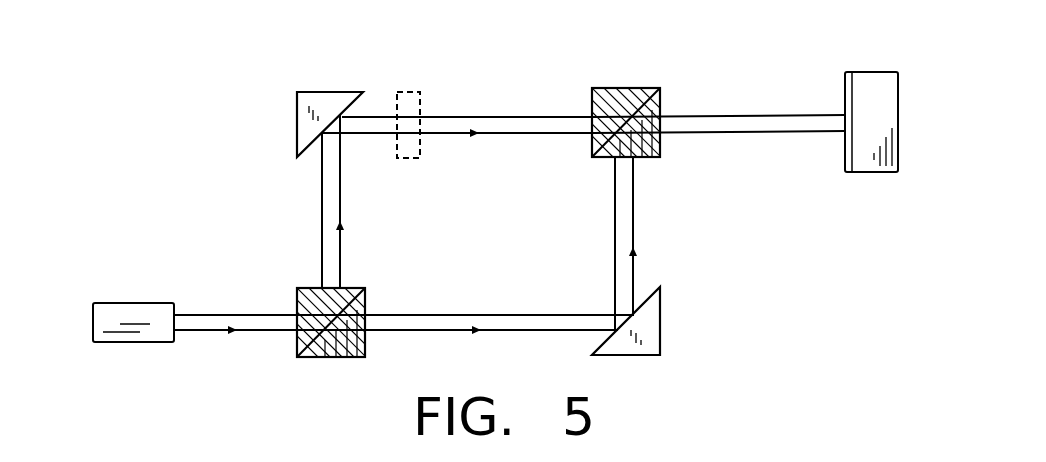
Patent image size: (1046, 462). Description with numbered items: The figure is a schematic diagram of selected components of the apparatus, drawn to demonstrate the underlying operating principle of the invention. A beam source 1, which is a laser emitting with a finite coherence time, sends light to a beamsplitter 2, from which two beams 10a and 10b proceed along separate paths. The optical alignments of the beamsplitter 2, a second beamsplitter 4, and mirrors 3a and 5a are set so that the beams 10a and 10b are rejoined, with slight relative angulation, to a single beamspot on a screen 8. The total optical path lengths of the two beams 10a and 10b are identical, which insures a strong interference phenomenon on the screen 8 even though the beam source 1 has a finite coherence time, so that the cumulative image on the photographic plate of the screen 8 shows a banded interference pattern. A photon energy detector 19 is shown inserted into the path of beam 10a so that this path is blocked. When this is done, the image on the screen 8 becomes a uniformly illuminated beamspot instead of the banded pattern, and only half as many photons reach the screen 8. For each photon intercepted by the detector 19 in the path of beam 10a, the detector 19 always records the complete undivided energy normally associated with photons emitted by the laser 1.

The beam source 1 is at (137, 302).
The beamsplitter 2 is at (325, 358).
The mirror 3a is at (650, 325).
The beamsplitter 4 is at (627, 88).
The mirror 5a is at (325, 98).
The screen 8 is at (872, 172).
The beam 10a is at (335, 183).
The beam 10b is at (615, 281).
The photon energy detector 19 is at (415, 90).